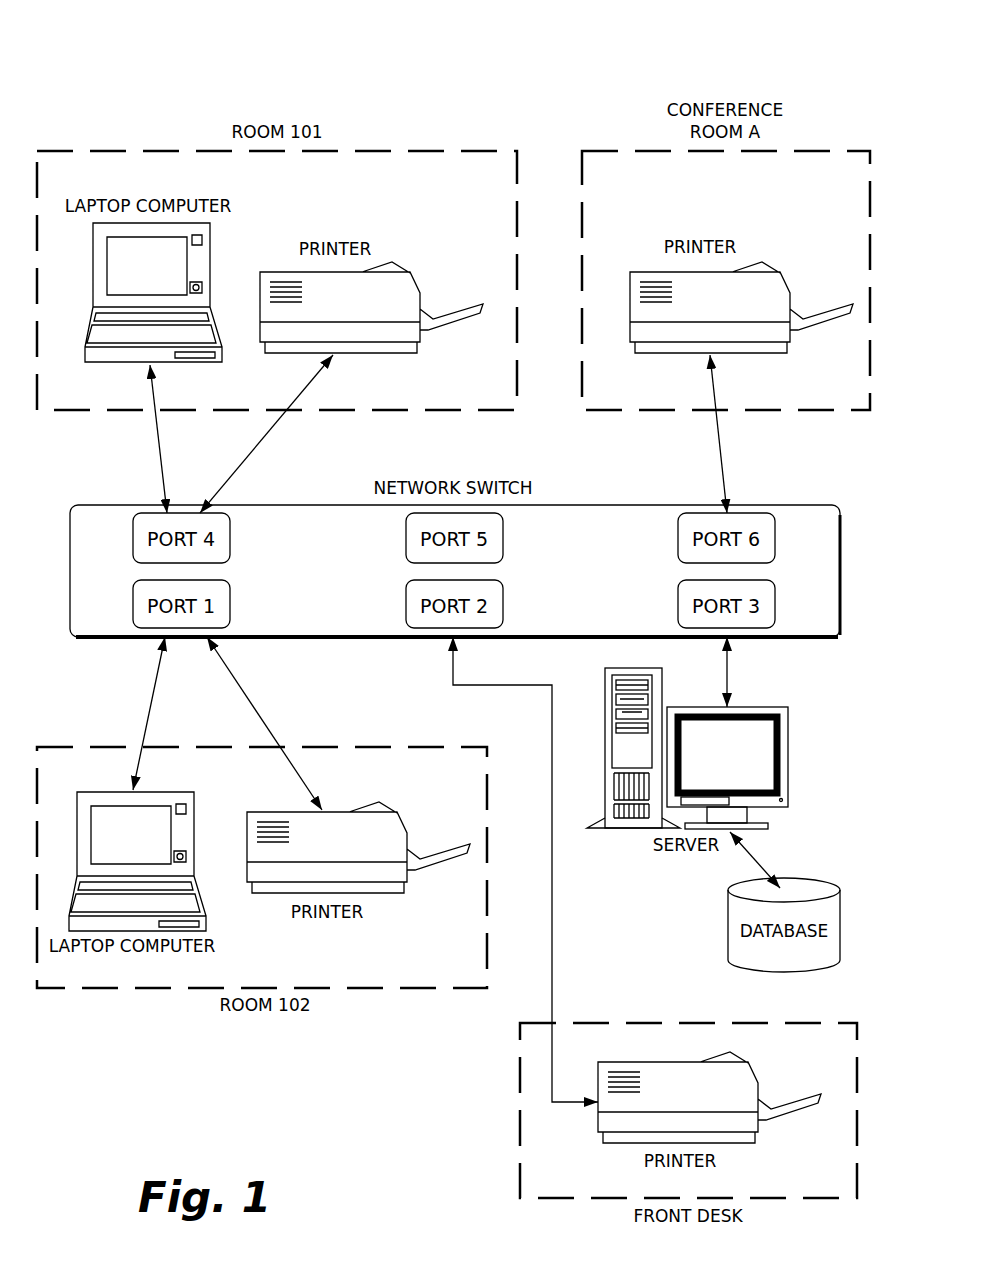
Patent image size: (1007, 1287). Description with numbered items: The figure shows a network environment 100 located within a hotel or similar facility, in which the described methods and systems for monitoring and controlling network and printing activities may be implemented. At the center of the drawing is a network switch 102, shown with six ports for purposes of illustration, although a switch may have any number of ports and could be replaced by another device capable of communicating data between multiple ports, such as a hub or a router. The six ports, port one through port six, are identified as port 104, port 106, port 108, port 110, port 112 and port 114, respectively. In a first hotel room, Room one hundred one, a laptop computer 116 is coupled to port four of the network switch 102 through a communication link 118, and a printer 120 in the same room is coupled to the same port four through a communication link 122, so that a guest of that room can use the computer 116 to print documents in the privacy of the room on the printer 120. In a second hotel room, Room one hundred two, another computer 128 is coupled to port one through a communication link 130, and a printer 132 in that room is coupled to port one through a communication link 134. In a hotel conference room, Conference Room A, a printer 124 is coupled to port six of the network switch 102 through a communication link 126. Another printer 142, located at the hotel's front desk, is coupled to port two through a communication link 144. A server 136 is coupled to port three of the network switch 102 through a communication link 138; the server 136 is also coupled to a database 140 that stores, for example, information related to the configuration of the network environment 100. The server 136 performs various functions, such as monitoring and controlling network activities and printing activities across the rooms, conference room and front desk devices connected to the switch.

The network environment 100 is at (165, 50).
The network switch 102 is at (100, 505).
The port 1 104 is at (232, 599).
The port 2 106 is at (505, 599).
The port 3 108 is at (678, 599).
The port 4 110 is at (232, 542).
The port 5 112 is at (505, 542).
The port 6 114 is at (678, 542).
The laptop computer 116 is at (130, 363).
The communication link 118 is at (156, 445).
The printer 120 is at (398, 354).
The communication link 122 is at (268, 442).
The printer 124 is at (668, 354).
The communication link 126 is at (718, 442).
The computer 128 is at (166, 792).
The communication link 130 is at (152, 690).
The printer 132 is at (393, 811).
The communication link 134 is at (248, 692).
The server 136 is at (790, 742).
The communication link 138 is at (727, 675).
The database 140 is at (728, 922).
The printer 142 is at (678, 1062).
The communication link 144 is at (556, 935).